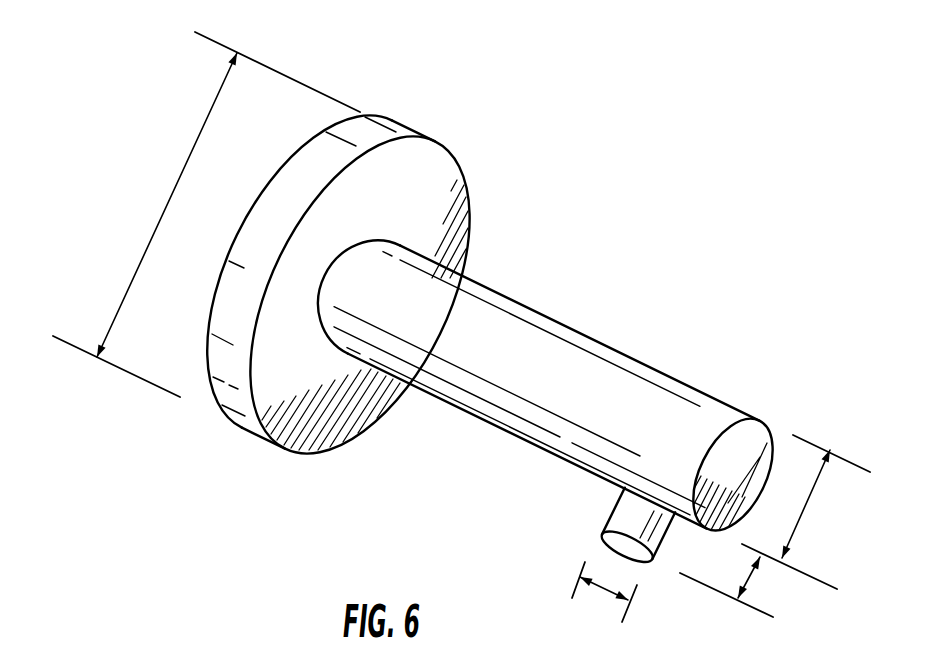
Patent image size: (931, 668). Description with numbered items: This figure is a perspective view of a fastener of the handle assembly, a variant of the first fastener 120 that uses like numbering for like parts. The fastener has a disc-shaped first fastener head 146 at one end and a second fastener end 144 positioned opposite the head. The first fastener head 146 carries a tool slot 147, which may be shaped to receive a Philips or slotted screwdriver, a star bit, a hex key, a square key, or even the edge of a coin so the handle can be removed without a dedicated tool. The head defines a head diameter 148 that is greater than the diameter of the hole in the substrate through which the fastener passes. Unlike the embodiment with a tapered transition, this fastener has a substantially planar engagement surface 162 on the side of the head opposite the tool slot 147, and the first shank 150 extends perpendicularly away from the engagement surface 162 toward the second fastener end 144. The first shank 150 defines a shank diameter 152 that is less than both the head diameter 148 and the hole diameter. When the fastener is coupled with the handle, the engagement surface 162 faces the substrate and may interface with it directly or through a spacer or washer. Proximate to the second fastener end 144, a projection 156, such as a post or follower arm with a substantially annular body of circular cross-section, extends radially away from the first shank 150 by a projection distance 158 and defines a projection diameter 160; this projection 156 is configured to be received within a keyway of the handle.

The first fastener 120 is at (78, 238).
The second fastener end 144 is at (762, 403).
The first fastener head 146 is at (393, 137).
The tool slot 147 is at (212, 301).
The head diameter 148 is at (206, 214).
The first shank 150 is at (545, 316).
The shank diameter 152 is at (808, 502).
The projection 156 is at (614, 498).
The projection distance 158 is at (757, 576).
The projection diameter 160 is at (603, 594).
The engagement surface 162 is at (418, 180).